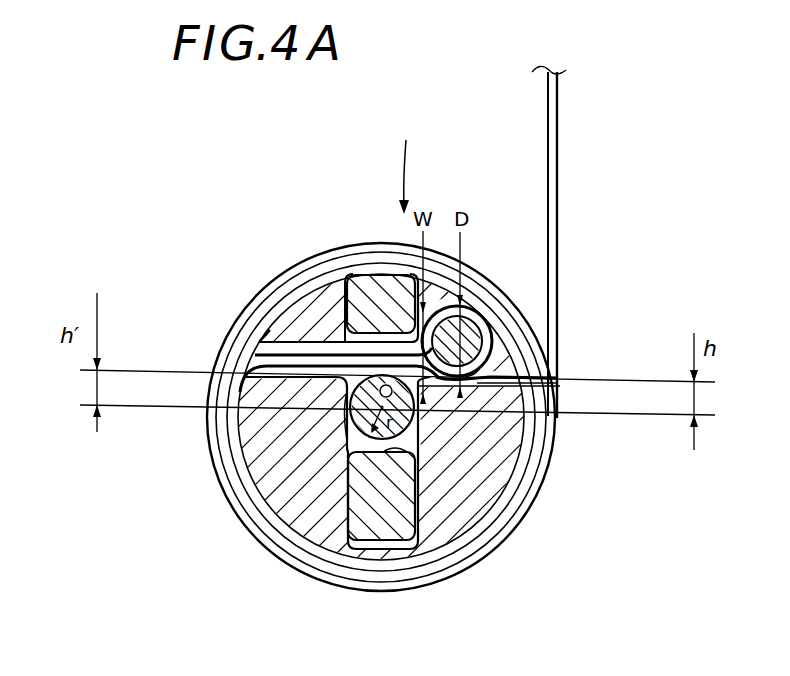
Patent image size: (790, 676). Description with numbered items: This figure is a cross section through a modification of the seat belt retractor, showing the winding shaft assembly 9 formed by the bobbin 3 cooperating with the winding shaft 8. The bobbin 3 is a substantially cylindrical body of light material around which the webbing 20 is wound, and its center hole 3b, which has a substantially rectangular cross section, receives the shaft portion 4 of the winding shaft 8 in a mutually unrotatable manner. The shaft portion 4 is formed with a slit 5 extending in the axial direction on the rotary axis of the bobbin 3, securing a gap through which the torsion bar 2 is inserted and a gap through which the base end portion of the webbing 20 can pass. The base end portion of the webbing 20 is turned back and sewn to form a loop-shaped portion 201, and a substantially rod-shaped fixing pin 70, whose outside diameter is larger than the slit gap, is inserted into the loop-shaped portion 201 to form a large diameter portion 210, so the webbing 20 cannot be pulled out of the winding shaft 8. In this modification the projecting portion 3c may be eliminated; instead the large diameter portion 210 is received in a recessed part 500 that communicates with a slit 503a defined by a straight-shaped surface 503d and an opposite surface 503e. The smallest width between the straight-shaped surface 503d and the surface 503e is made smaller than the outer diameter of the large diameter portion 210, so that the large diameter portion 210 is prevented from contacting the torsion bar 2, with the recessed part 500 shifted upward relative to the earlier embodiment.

The torsion bar 2 is at (420, 424).
The bobbin 3 is at (503, 422).
The center hole 3b is at (348, 404).
The projecting portion 3c is at (540, 466).
The shaft portion 4 is at (358, 278).
The slit 5 is at (380, 452).
The winding shaft 8 is at (372, 552).
The winding shaft assembly 9 is at (406, 166).
The webbing 20 is at (557, 243).
The fixing pin 70 is at (456, 306).
The loop-shaped portion 201 is at (505, 360).
The large diameter portion 210 is at (495, 373).
The recessed part 500 is at (500, 345).
The slit 503a is at (262, 345).
The straight-shaped surface 503d is at (260, 366).
The surface 503e is at (282, 338).